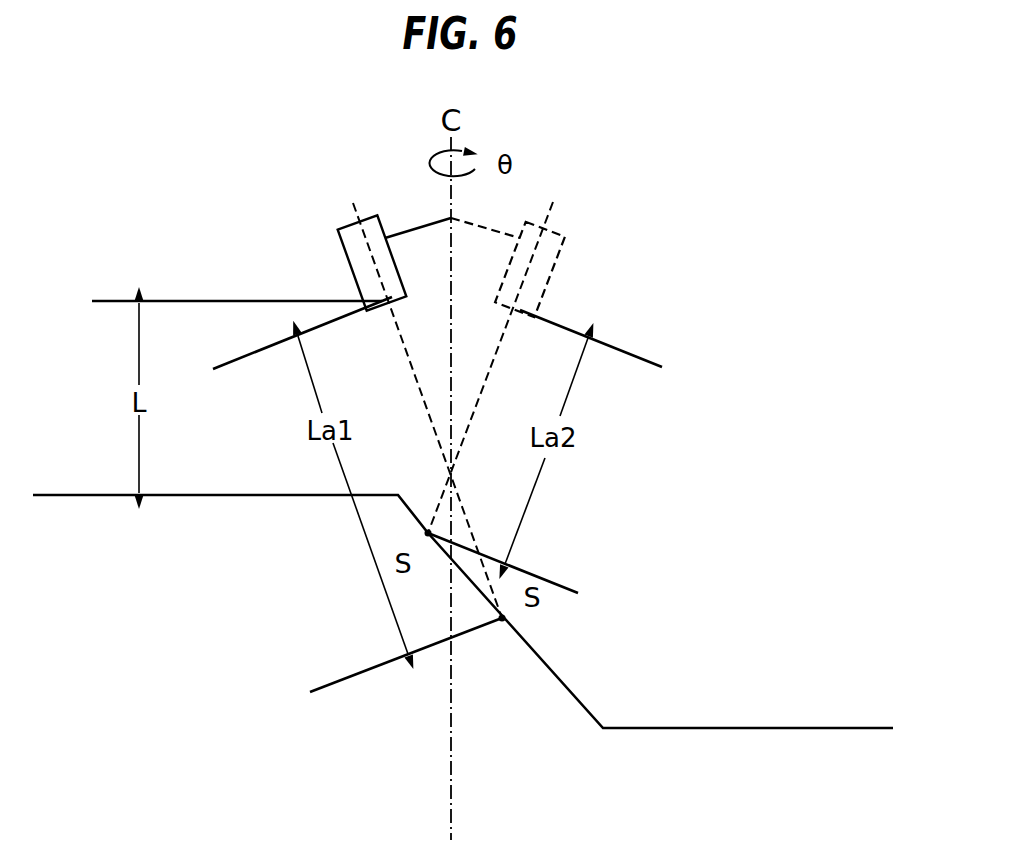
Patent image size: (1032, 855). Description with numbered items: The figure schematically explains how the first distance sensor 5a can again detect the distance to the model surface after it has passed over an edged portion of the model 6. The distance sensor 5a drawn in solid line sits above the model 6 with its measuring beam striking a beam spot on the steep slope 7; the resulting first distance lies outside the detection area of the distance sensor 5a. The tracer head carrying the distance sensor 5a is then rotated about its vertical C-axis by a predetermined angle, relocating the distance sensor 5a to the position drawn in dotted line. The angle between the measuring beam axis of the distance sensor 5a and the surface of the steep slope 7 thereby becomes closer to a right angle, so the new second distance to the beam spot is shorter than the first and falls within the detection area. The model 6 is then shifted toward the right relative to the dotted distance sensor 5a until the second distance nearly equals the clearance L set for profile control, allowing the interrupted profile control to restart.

The first distance sensor 5a is at (346, 245).
The model 6 is at (88, 497).
The steep slope 7 is at (548, 664).